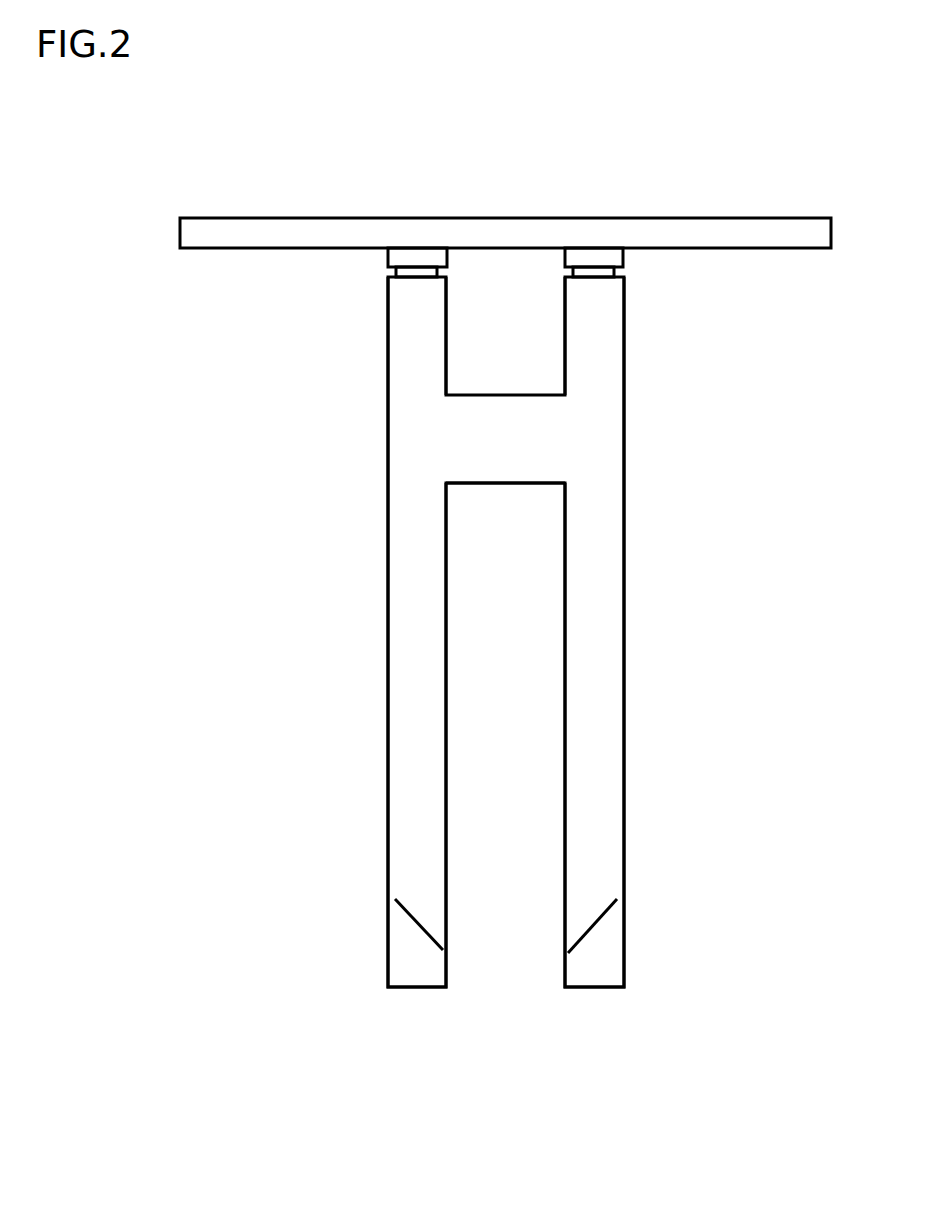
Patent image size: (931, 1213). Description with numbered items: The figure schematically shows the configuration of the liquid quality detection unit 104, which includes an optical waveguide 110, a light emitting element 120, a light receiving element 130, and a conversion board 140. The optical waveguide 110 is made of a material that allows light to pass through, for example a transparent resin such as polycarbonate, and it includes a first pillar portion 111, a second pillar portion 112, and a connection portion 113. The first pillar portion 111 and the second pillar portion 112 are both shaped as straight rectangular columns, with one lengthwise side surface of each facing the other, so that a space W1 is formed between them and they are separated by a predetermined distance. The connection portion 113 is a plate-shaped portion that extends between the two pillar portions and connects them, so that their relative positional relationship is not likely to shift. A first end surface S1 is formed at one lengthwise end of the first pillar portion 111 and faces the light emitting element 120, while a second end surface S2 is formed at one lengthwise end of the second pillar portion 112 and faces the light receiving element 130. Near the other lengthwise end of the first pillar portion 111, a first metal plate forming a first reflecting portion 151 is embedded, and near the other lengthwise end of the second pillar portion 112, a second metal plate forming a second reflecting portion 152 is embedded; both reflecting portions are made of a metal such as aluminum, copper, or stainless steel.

The liquid quality detection unit 104 is at (396, 1107).
The optical waveguide 110 is at (634, 764).
The first pillar portion 111 is at (624, 465).
The second pillar portion 112 is at (388, 613).
The connection portion 113 is at (475, 483).
The light emitting element 120 is at (590, 255).
The light receiving element 130 is at (410, 257).
The conversion board 140 is at (762, 217).
The first reflecting portion 151 is at (602, 920).
The second reflecting portion 152 is at (412, 918).
The first end surface S1 is at (592, 278).
The second end surface S2 is at (422, 278).
The space W1 is at (535, 988).